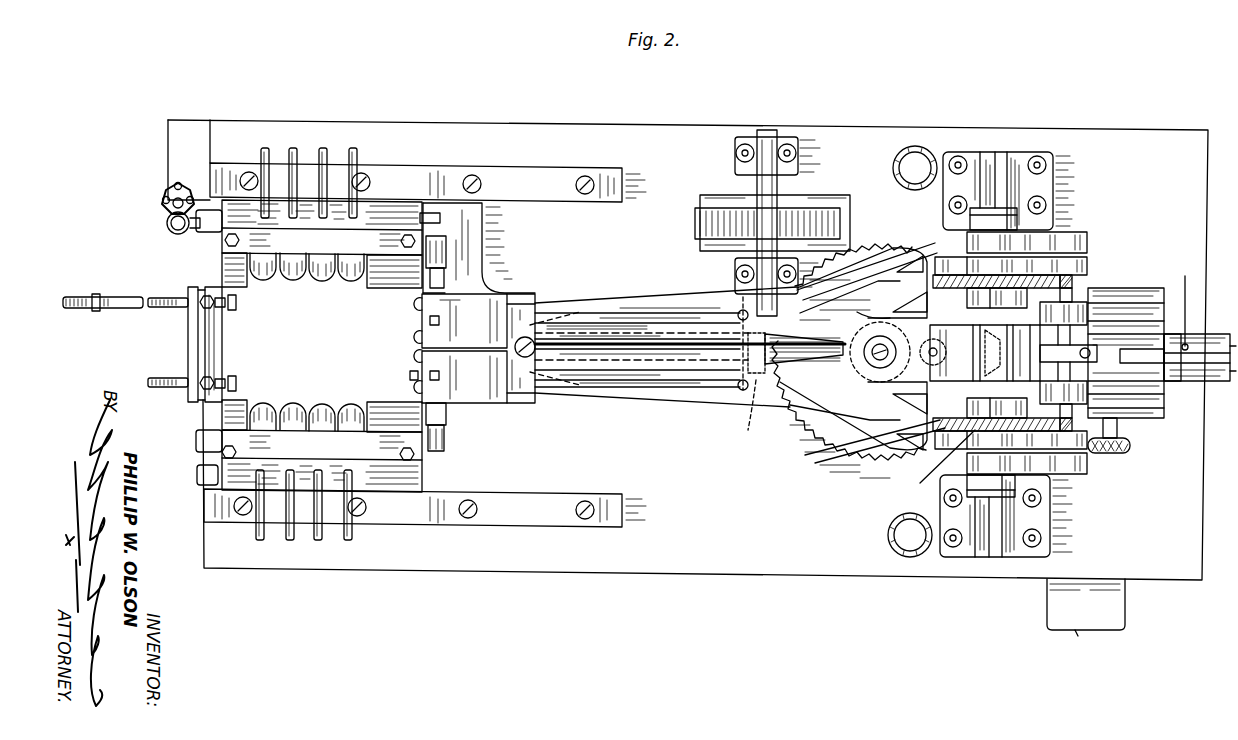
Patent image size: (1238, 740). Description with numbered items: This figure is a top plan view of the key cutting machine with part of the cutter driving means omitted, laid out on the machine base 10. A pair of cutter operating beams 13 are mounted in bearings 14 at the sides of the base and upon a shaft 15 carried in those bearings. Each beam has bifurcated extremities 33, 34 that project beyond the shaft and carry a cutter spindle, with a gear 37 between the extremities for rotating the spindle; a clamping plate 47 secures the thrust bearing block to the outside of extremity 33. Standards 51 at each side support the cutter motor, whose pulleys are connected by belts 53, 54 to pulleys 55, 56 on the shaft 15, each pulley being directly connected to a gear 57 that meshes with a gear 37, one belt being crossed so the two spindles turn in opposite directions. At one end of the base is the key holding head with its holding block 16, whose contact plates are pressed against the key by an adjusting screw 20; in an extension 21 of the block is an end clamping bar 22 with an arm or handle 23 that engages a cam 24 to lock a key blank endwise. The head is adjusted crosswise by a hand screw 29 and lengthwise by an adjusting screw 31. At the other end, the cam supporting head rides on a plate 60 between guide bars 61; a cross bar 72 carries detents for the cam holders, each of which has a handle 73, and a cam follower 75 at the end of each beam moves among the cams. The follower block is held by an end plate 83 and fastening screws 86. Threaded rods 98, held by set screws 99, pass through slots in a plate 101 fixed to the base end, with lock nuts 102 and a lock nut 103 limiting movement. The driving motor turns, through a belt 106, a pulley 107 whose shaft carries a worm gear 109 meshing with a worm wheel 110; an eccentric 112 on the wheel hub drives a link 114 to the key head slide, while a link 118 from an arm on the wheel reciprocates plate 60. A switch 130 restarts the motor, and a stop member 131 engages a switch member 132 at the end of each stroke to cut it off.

The machine base 10 is at (692, 556).
The cutter operating beams 13 is at (630, 306).
The bearings 14 is at (958, 226).
The shaft 15 is at (1000, 215).
The holding block 16 is at (1080, 363).
The adjusting screw 20 is at (1087, 348).
The extension 21 is at (1215, 373).
The end clamping bar 22 is at (1205, 366).
The arm or handle 23 is at (1200, 331).
The cam 24 is at (1181, 305).
The hand screw 29 is at (1130, 448).
The adjusting screw 31 is at (1040, 352).
The bifurcated extremity 33 is at (1088, 264).
The bifurcated extremity 34 is at (1088, 308).
The gear 37 is at (1073, 282).
The clamping plate 47 is at (1088, 236).
The standards 51 is at (893, 160).
The belt 53 is at (876, 308).
The belt 54 is at (876, 418).
The pulley 55 is at (1022, 286).
The pulley 56 is at (925, 456).
The gear 57 is at (925, 248).
The plate 60 is at (468, 232).
The guide bars 61 is at (498, 190).
The cross bar 72 is at (375, 236).
The handle 73 is at (350, 150).
The cam follower 75 is at (440, 266).
The end plate 83 is at (425, 359).
The fastening screws 86 is at (412, 323).
The threaded rods 98 is at (138, 310).
The set screws 99 is at (240, 303).
The plate 101 is at (190, 340).
The lock nuts 102 is at (212, 312).
The lock nut 103 is at (90, 314).
The belt 106 is at (695, 218).
The pulley 107 is at (718, 208).
The worm gear 109 is at (746, 369).
The worm wheel 110 is at (818, 445).
The eccentric 112 is at (866, 376).
The link 114 is at (948, 352).
The link 118 is at (558, 348).
The switch 130 is at (1095, 615).
The adjustable stop member 131 is at (172, 234).
The switch member 132 is at (165, 218).